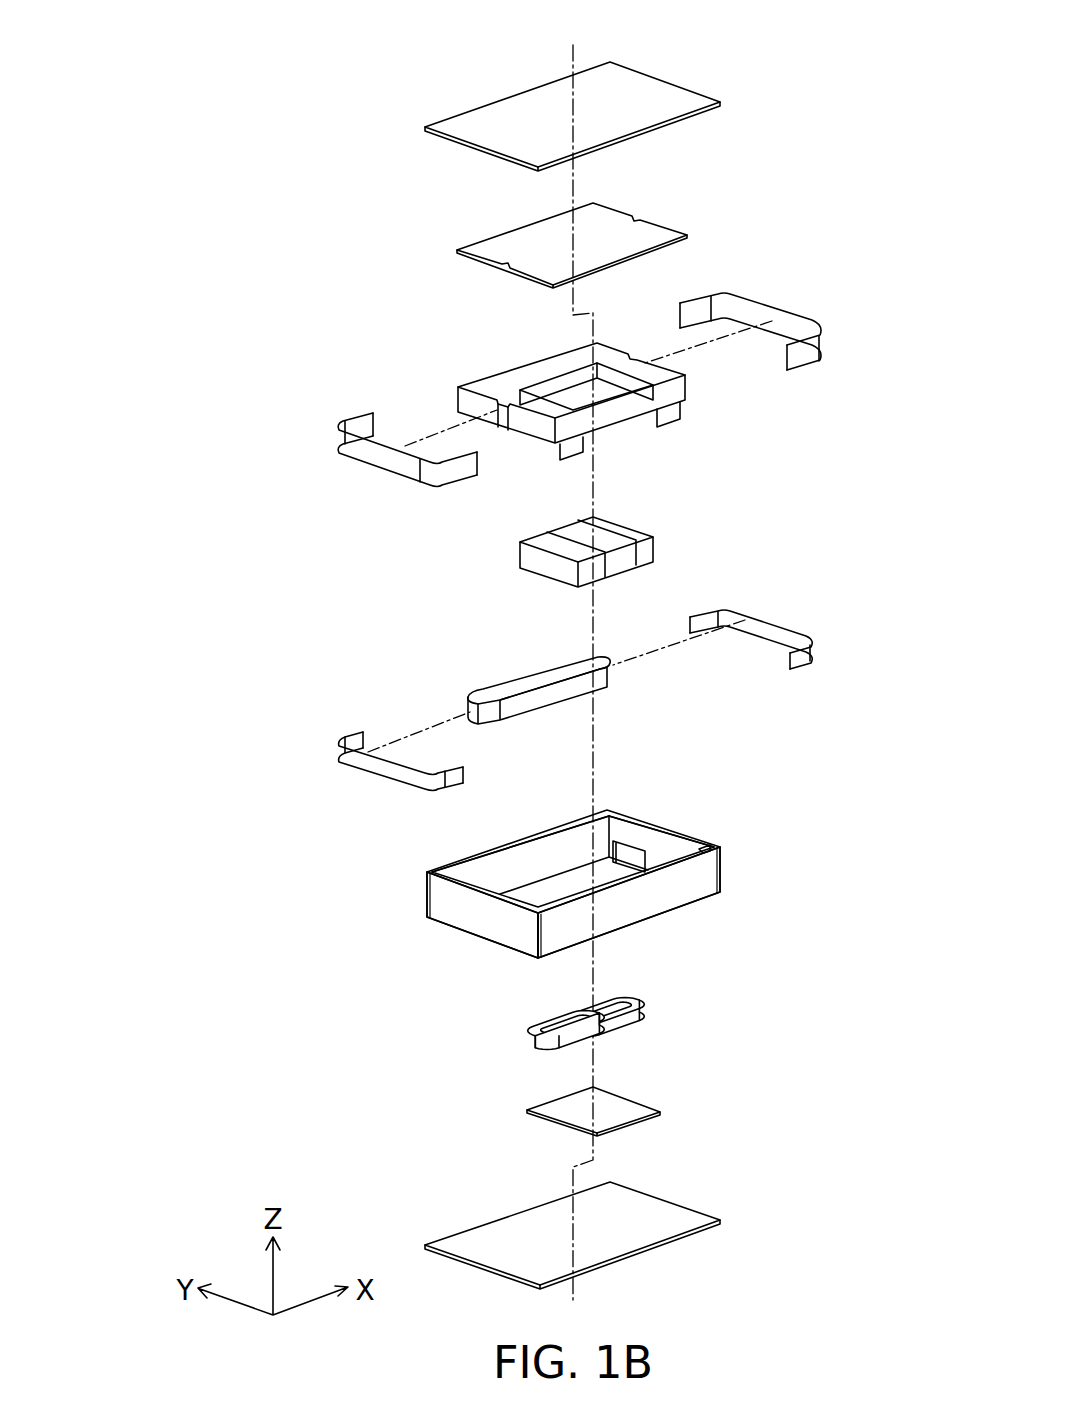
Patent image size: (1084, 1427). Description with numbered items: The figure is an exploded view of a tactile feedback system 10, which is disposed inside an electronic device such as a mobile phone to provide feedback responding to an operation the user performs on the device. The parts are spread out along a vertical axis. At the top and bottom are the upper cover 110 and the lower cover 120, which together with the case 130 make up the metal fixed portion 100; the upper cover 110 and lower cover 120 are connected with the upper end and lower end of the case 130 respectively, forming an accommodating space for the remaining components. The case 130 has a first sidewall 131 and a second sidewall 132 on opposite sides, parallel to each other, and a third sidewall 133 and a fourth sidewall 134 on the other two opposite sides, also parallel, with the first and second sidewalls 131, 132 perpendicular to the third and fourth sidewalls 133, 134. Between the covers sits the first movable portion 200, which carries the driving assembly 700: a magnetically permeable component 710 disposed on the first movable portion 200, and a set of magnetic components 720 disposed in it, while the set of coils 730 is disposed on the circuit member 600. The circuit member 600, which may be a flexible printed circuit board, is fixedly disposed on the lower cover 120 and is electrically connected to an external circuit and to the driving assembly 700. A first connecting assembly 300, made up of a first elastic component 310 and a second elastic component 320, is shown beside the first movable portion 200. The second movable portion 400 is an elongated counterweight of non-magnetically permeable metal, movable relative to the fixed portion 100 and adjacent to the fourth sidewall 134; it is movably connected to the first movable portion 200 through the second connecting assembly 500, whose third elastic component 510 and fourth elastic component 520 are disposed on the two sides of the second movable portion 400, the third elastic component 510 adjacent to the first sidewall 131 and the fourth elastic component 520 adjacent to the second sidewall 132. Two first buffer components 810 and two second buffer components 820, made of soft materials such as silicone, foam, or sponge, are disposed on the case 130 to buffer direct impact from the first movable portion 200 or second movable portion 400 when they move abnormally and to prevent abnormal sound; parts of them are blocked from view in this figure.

The tactile feedback system 10 is at (868, 33).
The fixed portion 100 is at (196, 9).
The upper cover 110 is at (683, 60).
The lower cover 120 is at (657, 1208).
The case 130 is at (785, 906).
The first sidewall 131 is at (697, 843).
The second sidewall 132 is at (478, 923).
The third sidewall 133 is at (657, 908).
The fourth sidewall 134 is at (465, 858).
The first movable portion 200 is at (523, 375).
The first connecting assembly 300 is at (196, 137).
The first elastic component 310 is at (825, 300).
The second elastic component 320 is at (375, 455).
The second movable portion 400 is at (532, 680).
The second connecting assembly 500 is at (196, 230).
The third elastic component 510 is at (801, 610).
The fourth elastic component 520 is at (355, 742).
The circuit member 600 is at (617, 1105).
The driving assembly 700 is at (196, 320).
The magnetically permeable component 710 is at (657, 200).
The magnetic components 720 is at (651, 508).
The coils 730 is at (647, 992).
The first buffer components 810 is at (712, 848).
The second buffer components 820 is at (627, 850).